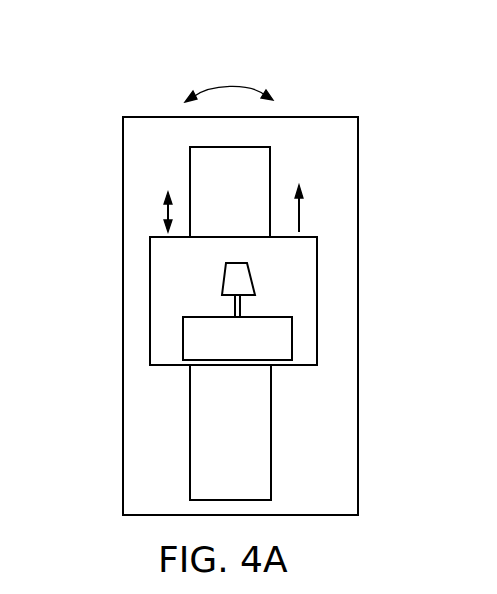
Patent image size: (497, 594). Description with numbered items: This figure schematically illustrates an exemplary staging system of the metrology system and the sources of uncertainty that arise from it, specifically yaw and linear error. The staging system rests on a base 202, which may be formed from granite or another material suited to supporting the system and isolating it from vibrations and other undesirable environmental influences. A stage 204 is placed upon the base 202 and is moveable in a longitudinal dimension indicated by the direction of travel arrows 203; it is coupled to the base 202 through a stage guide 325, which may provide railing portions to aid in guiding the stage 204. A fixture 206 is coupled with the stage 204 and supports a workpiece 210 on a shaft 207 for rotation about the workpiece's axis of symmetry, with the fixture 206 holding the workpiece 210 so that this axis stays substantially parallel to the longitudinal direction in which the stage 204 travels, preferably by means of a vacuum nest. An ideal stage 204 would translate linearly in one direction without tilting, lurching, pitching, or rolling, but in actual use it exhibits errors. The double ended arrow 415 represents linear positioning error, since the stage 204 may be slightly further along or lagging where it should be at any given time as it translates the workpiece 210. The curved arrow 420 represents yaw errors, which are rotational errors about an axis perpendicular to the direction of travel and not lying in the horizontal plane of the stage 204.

The base 202 is at (123, 515).
The arrows 203 is at (300, 206).
The stage 204 is at (150, 365).
The fixture 206 is at (183, 338).
The shaft 207 is at (235, 305).
The workpiece 210 is at (222, 280).
The stage guide 325 is at (190, 463).
The double ended arrow 415 is at (168, 211).
The curved arrow 420 is at (230, 86).